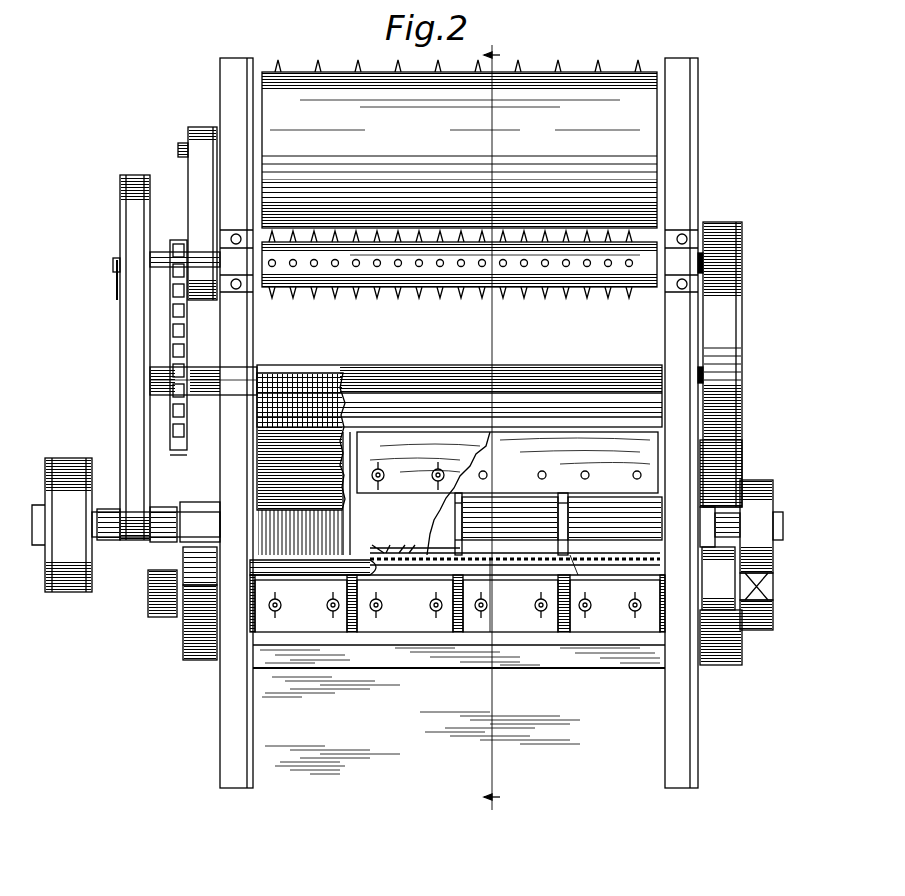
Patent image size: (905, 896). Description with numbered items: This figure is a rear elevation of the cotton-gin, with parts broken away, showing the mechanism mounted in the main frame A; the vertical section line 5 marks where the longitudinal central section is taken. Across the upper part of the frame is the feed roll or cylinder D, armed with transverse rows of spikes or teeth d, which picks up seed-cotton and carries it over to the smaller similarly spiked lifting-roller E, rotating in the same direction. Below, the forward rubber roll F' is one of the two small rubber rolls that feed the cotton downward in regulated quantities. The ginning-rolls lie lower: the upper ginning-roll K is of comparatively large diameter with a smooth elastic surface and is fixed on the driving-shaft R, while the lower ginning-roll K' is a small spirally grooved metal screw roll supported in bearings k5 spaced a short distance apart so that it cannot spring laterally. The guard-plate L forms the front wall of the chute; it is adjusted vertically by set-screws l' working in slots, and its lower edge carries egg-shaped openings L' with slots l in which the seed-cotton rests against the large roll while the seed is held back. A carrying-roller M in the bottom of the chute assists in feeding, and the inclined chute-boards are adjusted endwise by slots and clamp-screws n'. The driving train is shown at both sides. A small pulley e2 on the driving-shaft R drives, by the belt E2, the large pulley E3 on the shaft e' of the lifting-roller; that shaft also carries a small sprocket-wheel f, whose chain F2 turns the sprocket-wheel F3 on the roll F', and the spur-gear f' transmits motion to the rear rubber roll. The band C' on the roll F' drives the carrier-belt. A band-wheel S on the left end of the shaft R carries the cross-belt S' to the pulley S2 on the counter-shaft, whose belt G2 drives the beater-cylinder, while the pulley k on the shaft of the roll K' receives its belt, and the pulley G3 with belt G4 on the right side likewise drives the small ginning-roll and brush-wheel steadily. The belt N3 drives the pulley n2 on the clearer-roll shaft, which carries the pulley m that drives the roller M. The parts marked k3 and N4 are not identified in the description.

The main frame A is at (220, 80).
The section line 5 is at (495, 422).
The feed roll or cylinder D is at (459, 150).
The spikes or teeth d is at (458, 59).
The lifting-roller E is at (459, 264).
The forward rubber roll F' is at (459, 448).
The guard-plate L is at (507, 493).
The slots l is at (374, 486).
The set-screws l' is at (536, 473).
The egg-shaped openings L' is at (415, 532).
The upper ginning-roll K is at (506, 524).
The lower ginning-roll K' is at (610, 524).
The chain k3 is at (450, 560).
The carrying-roller M is at (313, 568).
The box N4 is at (457, 603).
The slots and clamp-screws n' is at (455, 602).
The pulley k is at (490, 585).
The bearings k5 is at (676, 566).
The belt E2 is at (134, 357).
The large pulley E3 is at (118, 318).
The lifter-roller shaft e' is at (100, 265).
The chain F2 is at (186, 326).
The sprocket-wheel F3 is at (176, 420).
The small sprocket-wheel f is at (185, 246).
The spur-gear f' is at (203, 371).
The driving-shaft R is at (788, 527).
The small pulley e2 is at (120, 512).
The belt N3 is at (180, 548).
The pulley n2 is at (155, 617).
The belt G4 is at (200, 588).
The pulley G3 is at (185, 648).
The band C' is at (720, 364).
The belt G2 is at (721, 493).
The band-wheel S is at (784, 485).
The pulley m is at (721, 606).
The cross-belt S' is at (774, 586).
The pulley S2 is at (773, 612).